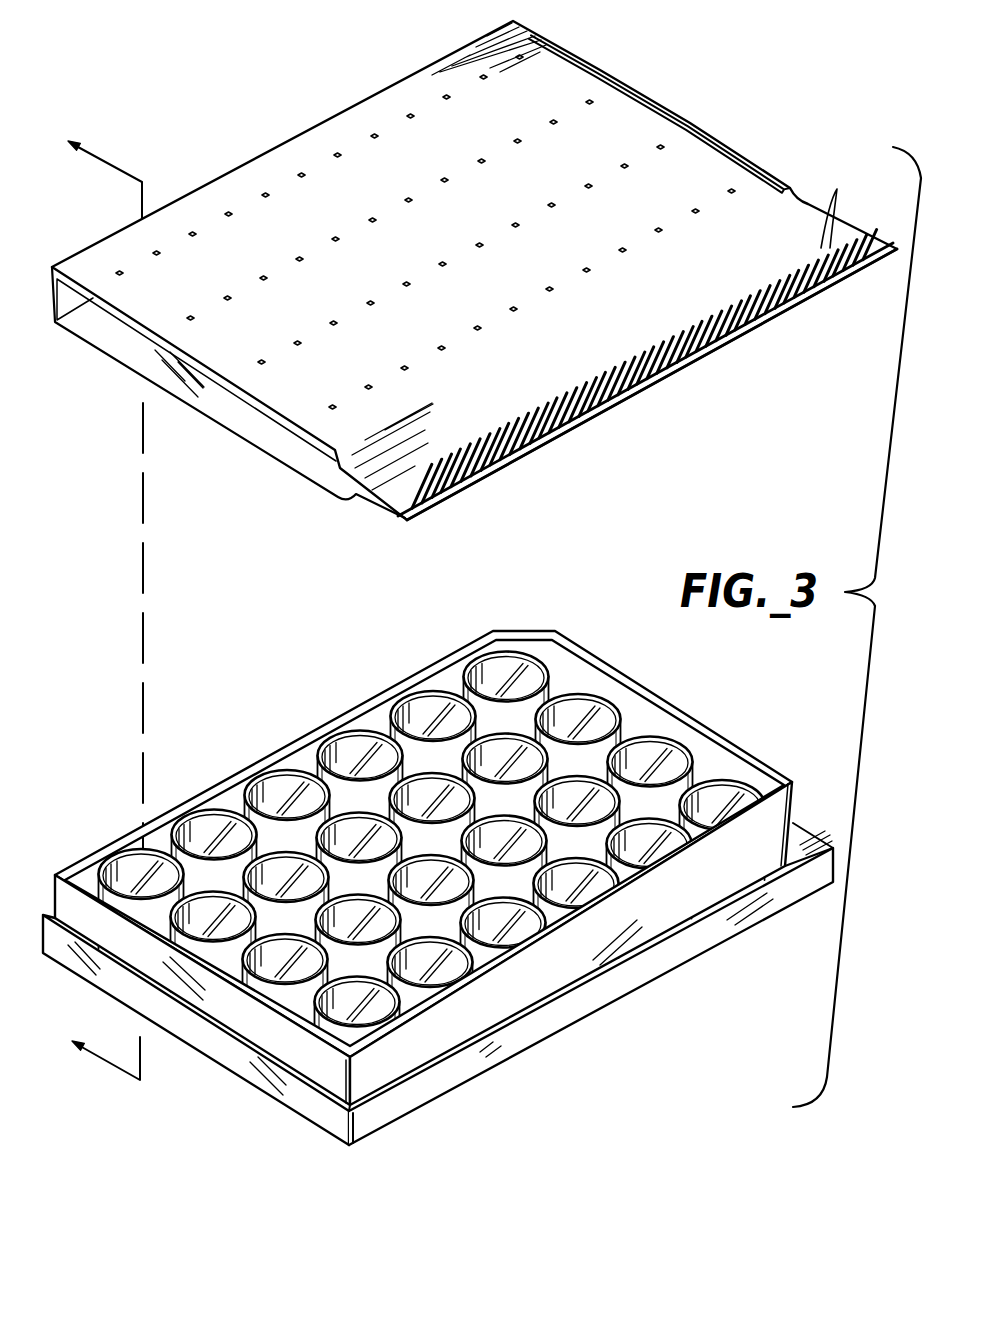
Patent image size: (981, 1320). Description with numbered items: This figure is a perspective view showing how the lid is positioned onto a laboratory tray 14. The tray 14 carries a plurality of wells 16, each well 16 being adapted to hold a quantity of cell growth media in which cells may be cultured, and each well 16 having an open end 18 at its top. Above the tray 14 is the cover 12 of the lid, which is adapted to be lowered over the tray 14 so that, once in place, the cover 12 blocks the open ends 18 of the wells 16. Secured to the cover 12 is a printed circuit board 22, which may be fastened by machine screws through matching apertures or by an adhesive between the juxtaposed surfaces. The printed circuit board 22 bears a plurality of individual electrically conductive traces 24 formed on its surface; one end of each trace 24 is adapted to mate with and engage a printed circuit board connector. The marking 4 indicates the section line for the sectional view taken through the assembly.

The section line 4- 4 is at (98, 599).
The cover 12 is at (243, 428).
The laboratory tray 14 is at (260, 760).
The wells 16 is at (410, 712).
The open end 18 is at (647, 753).
The printed circuit board 22 is at (456, 240).
The electrically conductive traces 24 is at (837, 189).